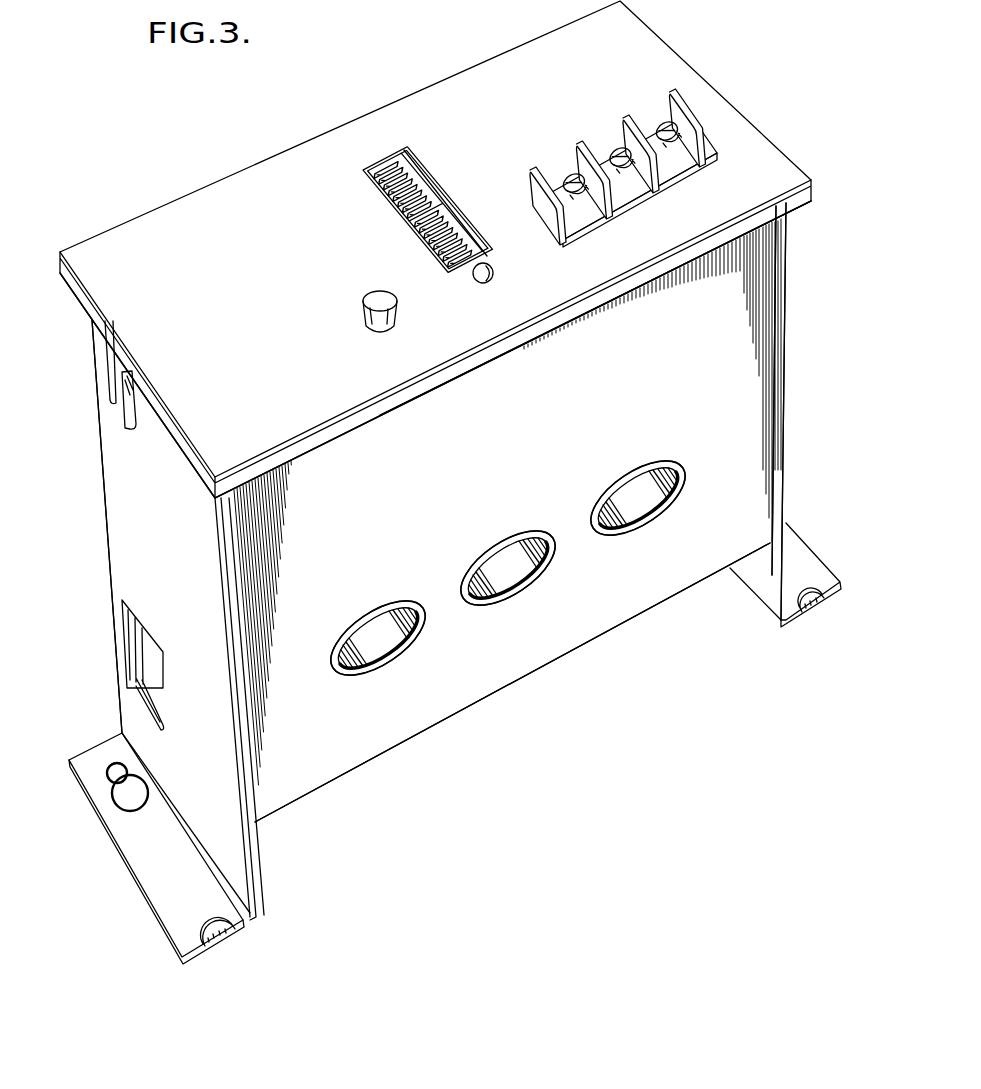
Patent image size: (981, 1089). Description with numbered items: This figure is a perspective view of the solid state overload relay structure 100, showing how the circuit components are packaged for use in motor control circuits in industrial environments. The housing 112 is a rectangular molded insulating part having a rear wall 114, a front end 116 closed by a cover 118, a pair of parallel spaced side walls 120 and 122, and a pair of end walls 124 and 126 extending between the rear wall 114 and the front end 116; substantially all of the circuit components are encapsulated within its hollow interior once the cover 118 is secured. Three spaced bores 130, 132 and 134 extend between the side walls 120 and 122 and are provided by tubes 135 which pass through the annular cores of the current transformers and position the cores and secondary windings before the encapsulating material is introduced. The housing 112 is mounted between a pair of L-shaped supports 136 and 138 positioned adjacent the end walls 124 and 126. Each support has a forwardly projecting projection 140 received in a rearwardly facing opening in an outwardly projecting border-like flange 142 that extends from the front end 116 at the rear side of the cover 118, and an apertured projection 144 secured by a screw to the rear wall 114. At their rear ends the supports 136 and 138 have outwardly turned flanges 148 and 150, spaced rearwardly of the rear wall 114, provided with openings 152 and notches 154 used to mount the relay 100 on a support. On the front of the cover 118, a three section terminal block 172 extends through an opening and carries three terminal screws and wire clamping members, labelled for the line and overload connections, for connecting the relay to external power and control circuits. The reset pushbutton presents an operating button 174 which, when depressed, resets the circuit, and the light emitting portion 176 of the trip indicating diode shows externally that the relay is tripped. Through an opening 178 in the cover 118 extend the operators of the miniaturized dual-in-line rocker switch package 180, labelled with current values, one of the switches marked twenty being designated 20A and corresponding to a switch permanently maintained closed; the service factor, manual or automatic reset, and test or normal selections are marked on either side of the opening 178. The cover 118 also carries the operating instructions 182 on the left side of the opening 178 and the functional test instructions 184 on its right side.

The solid state relay structure 100 is at (740, 72).
The housing 112 is at (740, 355).
The rear wall 114 is at (512, 688).
The front end 116 is at (482, 366).
The cover 118 is at (762, 157).
The side wall 120 is at (597, 627).
The side wall 122 is at (98, 447).
The end wall 124 is at (234, 593).
The end wall 126 is at (776, 420).
The bore 130 is at (386, 648).
The bore 132 is at (511, 579).
The bore 134 is at (645, 508).
The tubes 135 is at (473, 562).
The L-shaped support 136 is at (127, 536).
The L-shaped support 138 is at (787, 268).
The forwardly projecting projection 140 is at (118, 375).
The border-like flange 142 is at (798, 203).
The apertured projection 144 is at (150, 688).
The outwardly turned flange 148 is at (155, 858).
The outwardly turned flange 150 is at (802, 555).
The openings 152 is at (114, 796).
The notches 154 is at (222, 932).
The terminal block 172 is at (705, 130).
The operating button 174 is at (363, 312).
The light emitting portion 176 is at (494, 272).
The opening 178 is at (452, 205).
The switch package 180 is at (404, 152).
The operating instructions 182 is at (248, 289).
The functional test instructions 184 is at (606, 108).
The switch operator 20A is at (470, 196).